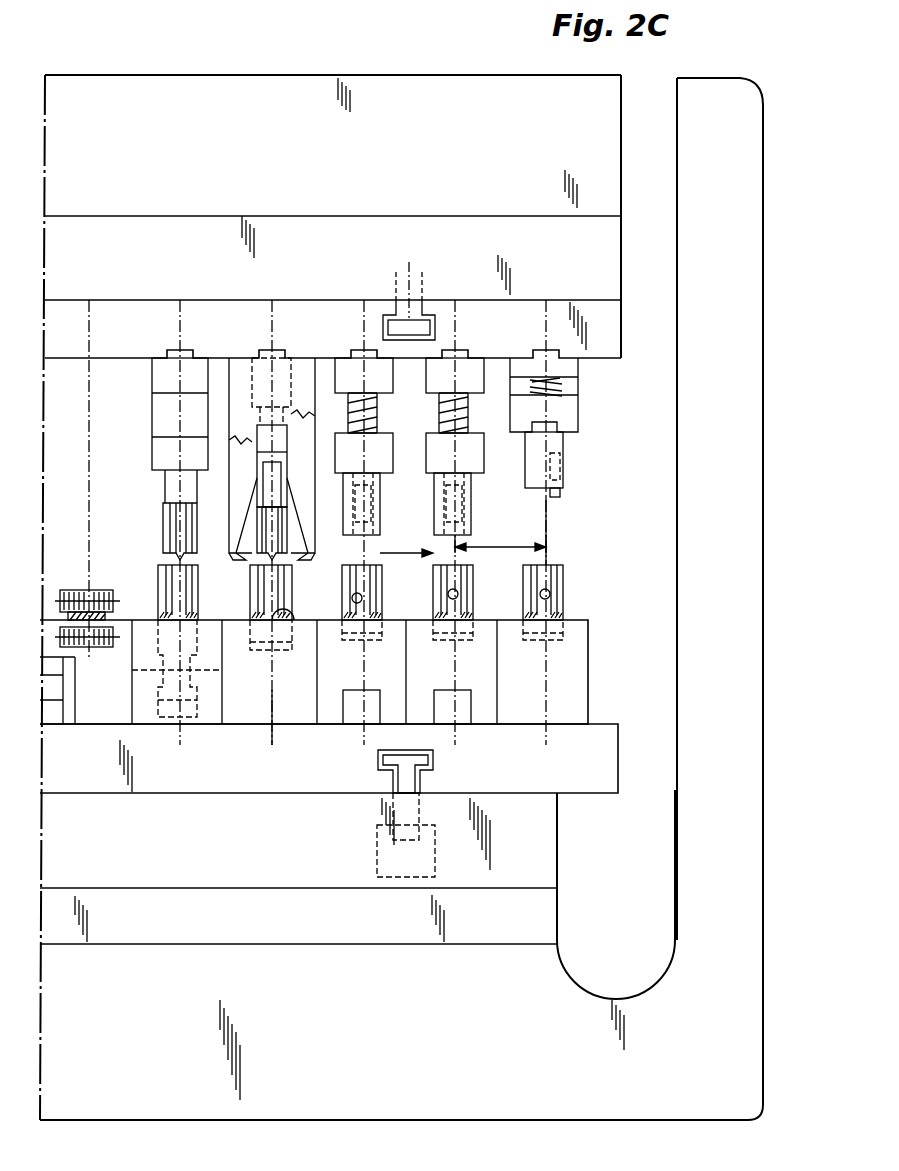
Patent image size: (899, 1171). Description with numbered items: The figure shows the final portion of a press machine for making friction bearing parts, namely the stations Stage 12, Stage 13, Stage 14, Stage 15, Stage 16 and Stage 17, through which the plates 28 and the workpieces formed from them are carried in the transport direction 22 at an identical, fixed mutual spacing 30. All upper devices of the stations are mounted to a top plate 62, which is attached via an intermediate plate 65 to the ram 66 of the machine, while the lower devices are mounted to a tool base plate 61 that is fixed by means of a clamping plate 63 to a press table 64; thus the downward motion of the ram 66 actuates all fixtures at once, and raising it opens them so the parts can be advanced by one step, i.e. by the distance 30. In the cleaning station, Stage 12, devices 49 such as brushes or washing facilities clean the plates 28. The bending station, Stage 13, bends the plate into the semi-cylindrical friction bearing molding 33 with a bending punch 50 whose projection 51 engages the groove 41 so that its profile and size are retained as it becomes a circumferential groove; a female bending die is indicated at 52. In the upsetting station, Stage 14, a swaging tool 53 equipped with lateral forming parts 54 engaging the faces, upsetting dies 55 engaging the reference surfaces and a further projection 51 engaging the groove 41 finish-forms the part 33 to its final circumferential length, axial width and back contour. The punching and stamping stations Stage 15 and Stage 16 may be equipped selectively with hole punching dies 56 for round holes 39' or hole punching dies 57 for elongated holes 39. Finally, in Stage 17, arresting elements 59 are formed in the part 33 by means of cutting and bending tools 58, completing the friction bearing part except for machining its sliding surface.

The cleaning station (Stage 12) 12 is at (89, 450).
The bending station (Stage 13) 13 is at (180, 492).
The upsetting station (Stage 14) 14 is at (272, 492).
The punching and stamping station (Stage 15) 15 is at (364, 492).
The punching and stamping station (Stage 16) 16 is at (455, 492).
The arresting-element forming station (Stage 17) 17 is at (546, 492).
The transport direction 22 is at (390, 553).
The plate 28 is at (108, 618).
The mutual spacing 30 is at (496, 553).
The semi-cylindrical friction bearing molding 33 is at (200, 622).
The elongated hole 39 is at (521, 592).
The round hole 39' is at (383, 592).
The circumferential groove 41 is at (176, 582).
The cleaning devices 49 is at (98, 590).
The bending punch 50 is at (160, 453).
The projection 51 is at (176, 549).
The female bending die 52 is at (285, 717).
The swaging tool 53 is at (302, 388).
The lateral forming parts 54 is at (243, 556).
The upsetting dies 55 is at (262, 505).
The hole punching dies for round holes 56 is at (370, 514).
The hole punching dies for elongated holes 57 is at (462, 505).
The cutting and bending tools 58 is at (566, 478).
The arresting elements 59 is at (556, 560).
The tool base plate 61 is at (284, 780).
The top plate 62 is at (610, 320).
The clamping plate 63 is at (320, 878).
The press table 64 is at (373, 933).
The intermediate plate 65 is at (415, 232).
The ram 66 is at (135, 98).